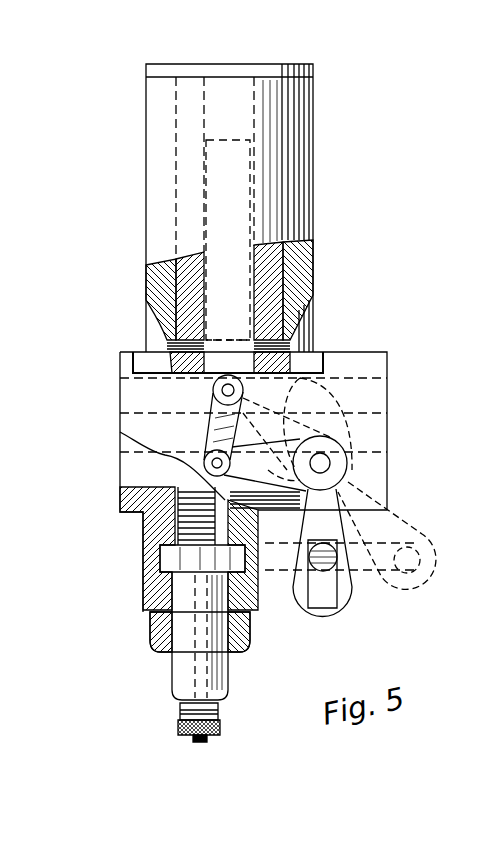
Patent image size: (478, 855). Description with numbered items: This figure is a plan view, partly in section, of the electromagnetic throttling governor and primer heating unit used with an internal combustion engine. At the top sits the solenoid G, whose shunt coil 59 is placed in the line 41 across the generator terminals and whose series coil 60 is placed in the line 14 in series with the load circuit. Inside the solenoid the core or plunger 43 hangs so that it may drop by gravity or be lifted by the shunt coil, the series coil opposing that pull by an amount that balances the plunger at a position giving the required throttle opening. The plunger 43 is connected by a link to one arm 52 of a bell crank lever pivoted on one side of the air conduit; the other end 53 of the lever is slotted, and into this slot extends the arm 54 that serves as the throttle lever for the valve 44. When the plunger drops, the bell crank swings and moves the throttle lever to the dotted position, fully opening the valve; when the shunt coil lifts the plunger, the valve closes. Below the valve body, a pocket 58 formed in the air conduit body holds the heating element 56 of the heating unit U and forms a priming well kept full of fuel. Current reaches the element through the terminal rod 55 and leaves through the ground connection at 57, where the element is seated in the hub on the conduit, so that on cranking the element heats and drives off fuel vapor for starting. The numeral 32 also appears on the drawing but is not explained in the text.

The line 41 is at (176, 92).
The solenoid G is at (228, 222).
The line 14 is at (313, 317).
The shunt coil 59 is at (175, 291).
The series coil 60 is at (300, 262).
The solenoid core 43 is at (228, 310).
The throttle valve 44 is at (390, 402).
The pocket 58 is at (140, 447).
The bell crank lever arm 52 is at (232, 426).
The slotted end 53 is at (330, 526).
The arm 54 is at (333, 565).
The lower body 32 is at (173, 569).
The heating element 56 is at (177, 524).
The ground 57 is at (182, 562).
The heating unit U is at (188, 658).
The terminal rod 55 is at (200, 745).